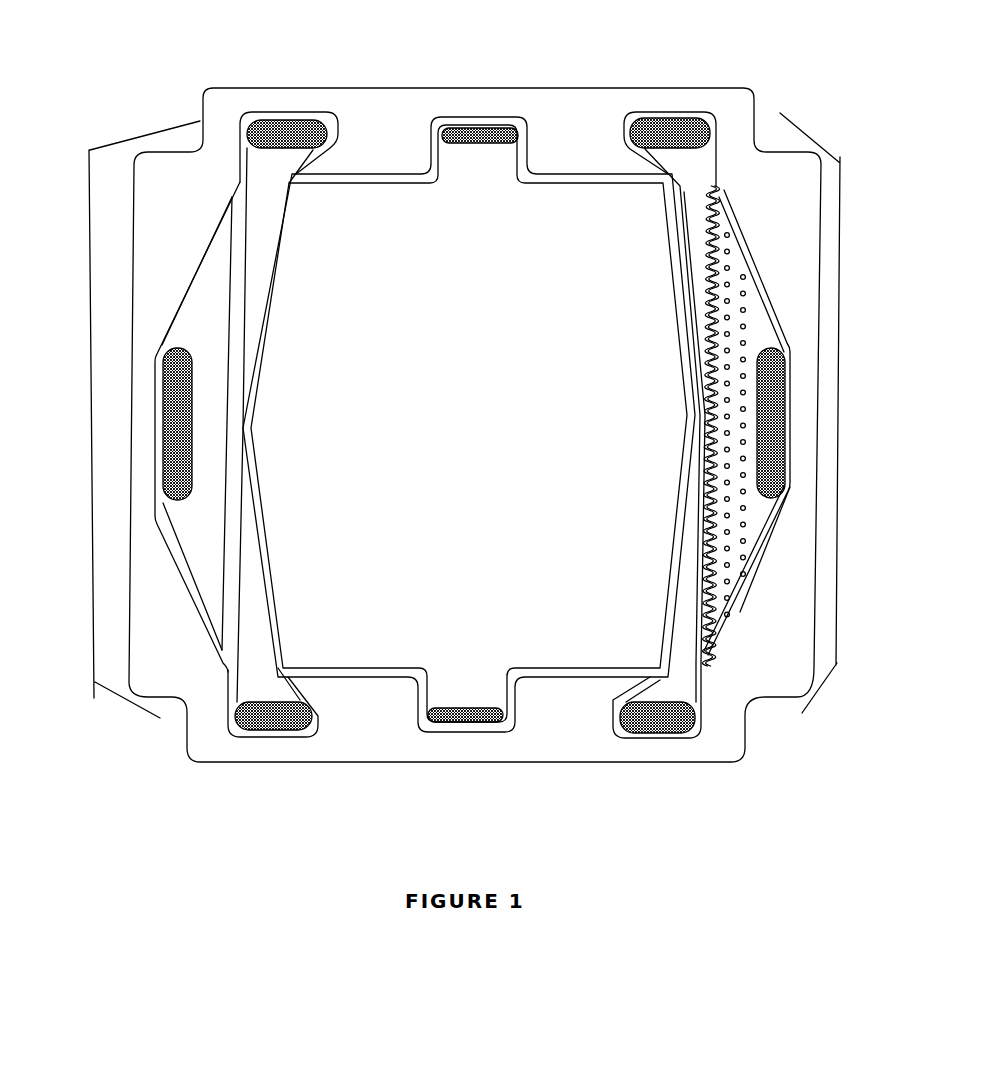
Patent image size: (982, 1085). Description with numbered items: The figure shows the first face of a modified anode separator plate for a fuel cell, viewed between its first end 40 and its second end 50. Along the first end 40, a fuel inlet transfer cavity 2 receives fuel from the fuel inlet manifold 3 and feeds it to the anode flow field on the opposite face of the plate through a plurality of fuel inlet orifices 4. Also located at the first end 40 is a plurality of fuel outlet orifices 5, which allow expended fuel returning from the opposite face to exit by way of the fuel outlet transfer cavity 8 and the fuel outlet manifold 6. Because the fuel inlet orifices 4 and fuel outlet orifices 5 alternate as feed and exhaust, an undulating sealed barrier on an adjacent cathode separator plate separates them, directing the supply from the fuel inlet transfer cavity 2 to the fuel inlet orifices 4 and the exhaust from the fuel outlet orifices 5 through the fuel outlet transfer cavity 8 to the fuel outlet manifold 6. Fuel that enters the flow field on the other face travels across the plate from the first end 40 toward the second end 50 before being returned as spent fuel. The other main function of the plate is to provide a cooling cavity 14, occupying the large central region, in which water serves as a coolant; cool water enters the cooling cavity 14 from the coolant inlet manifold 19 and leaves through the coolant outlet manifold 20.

The fuel inlet transfer cavity 2 is at (700, 202).
The fuel inlet manifold 3 is at (688, 132).
The fuel inlet orifices 4 is at (710, 645).
The fuel outlet orifices 5 is at (717, 615).
The fuel outlet manifold 6 is at (783, 418).
The fuel outlet transfer cavity 8 is at (757, 331).
The cooling cavity 14 is at (352, 438).
The coolant inlet manifold 19 is at (470, 722).
The coolant outlet manifold 20 is at (485, 128).
The first end 40 is at (840, 255).
The second end 50 is at (90, 408).